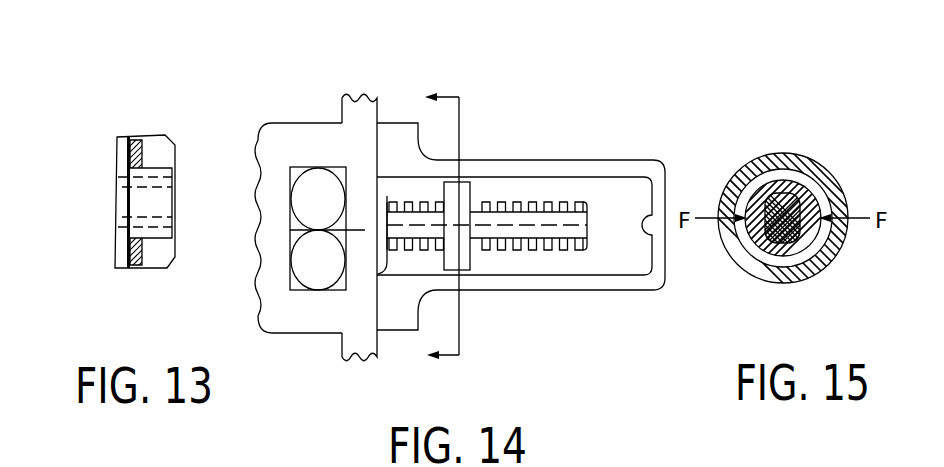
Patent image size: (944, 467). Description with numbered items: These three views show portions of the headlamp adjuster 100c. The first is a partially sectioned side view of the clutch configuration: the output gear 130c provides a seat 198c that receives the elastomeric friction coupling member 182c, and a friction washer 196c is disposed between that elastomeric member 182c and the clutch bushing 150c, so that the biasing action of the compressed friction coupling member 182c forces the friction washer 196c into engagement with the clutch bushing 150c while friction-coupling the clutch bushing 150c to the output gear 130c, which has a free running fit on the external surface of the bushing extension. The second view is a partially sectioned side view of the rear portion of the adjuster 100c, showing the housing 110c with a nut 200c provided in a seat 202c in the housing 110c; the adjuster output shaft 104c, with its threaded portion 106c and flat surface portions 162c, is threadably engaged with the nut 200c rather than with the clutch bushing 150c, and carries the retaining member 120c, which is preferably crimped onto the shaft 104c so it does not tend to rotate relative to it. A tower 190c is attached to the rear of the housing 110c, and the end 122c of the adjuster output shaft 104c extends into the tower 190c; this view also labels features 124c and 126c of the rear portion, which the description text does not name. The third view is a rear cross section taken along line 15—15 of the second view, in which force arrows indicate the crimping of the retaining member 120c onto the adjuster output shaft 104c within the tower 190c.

In FIG. 14, the headlamp adjuster 100c is at (560, 59).
In FIG. 14, the adjuster output shaft 104c is at (546, 190).
In FIG. 15, the adjuster output shaft 104c is at (758, 257).
In FIG. 14, the threaded portion 106c is at (433, 251).
In FIG. 14, the housing 110c is at (303, 111).
In FIG. 14, the retaining member 120c is at (468, 185).
In FIG. 15, the retaining member 120c is at (816, 166).
In FIG. 14, the end of the adjuster output shaft 122c is at (593, 213).
In FIG. 14, the sleeve end wall 124c is at (645, 236).
In FIG. 14, the pin 126c is at (388, 196).
In FIG. 13, the output gear 130c is at (158, 158).
In FIG. 13, the clutch bushing 150c is at (128, 178).
In FIG. 14, the flat surface portions 162c is at (497, 235).
In FIG. 13, the friction coupling member 182c is at (130, 232).
In FIG. 14, the tower 190c is at (539, 307).
In FIG. 15, the tower 190c is at (786, 154).
In FIG. 13, the friction washer 196c is at (132, 268).
In FIG. 13, the seat 198c is at (142, 255).
In FIG. 14, the nut 200c is at (322, 275).
In FIG. 14, the seat 202c is at (312, 168).
In FIG. 14, the section line 15— 15 is at (450, 228).